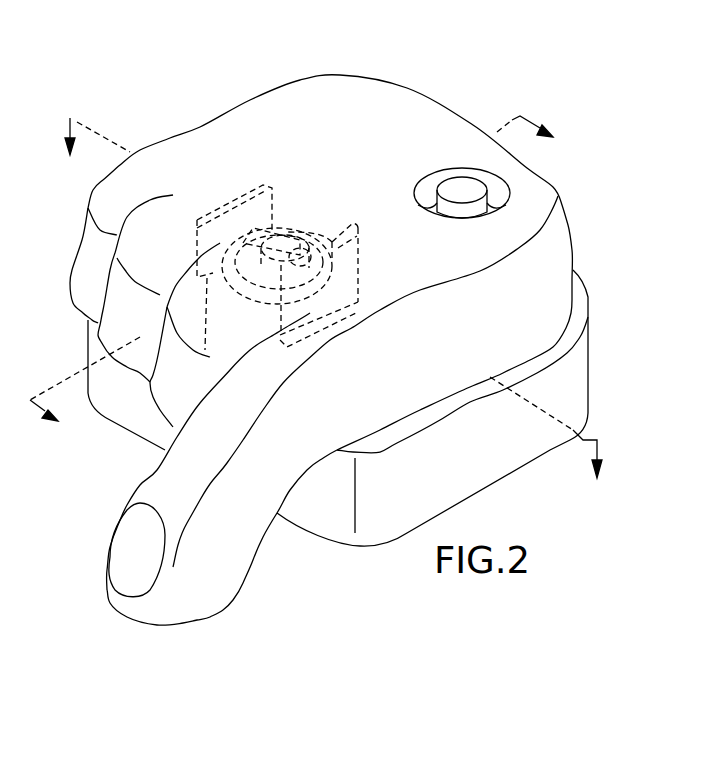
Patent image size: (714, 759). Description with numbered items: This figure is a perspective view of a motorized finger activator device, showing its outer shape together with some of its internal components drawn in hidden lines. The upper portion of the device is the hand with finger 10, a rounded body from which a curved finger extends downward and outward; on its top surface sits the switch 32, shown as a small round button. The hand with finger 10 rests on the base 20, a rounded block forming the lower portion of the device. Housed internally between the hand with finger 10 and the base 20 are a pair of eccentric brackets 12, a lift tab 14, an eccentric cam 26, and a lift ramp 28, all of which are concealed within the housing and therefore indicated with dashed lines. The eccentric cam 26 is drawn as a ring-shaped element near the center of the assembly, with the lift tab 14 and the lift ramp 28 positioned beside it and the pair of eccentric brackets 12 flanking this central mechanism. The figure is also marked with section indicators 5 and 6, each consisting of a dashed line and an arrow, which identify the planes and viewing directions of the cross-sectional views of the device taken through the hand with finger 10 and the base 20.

The hand with finger 10 is at (403, 107).
The pair of eccentric brackets 12 is at (215, 240).
The lift tab 14 is at (353, 223).
The base 20 is at (483, 477).
The eccentric cam 26 is at (293, 229).
The lift ramp 28 is at (203, 355).
The switch 32 is at (470, 192).
The section line 5 is at (333, 315).
The section line 6 is at (302, 280).